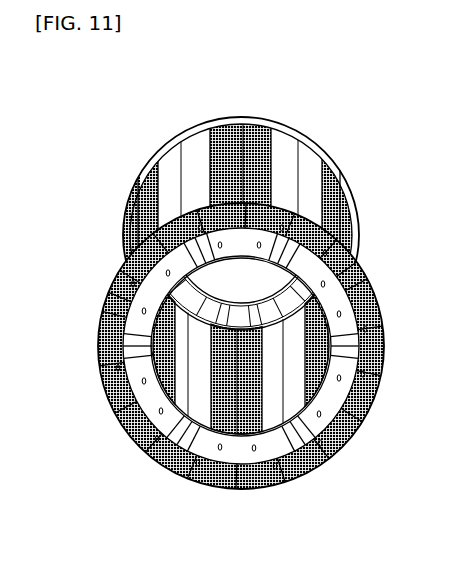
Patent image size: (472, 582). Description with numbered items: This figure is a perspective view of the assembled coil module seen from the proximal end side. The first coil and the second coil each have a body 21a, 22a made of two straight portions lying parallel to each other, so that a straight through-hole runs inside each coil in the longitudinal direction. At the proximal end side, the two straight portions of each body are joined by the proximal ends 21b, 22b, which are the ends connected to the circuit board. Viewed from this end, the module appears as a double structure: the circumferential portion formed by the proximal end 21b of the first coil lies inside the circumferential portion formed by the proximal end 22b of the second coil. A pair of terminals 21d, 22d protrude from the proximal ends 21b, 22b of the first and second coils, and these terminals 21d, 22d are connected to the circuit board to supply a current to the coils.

The body of the first coil 21a is at (170, 165).
The proximal end of the first coil 21b is at (225, 462).
The terminal of the first coil 21d is at (359, 419).
The body of the second coil 22a is at (140, 163).
The proximal end of the second coil 22b is at (120, 222).
The terminal of the second coil 22d is at (378, 344).